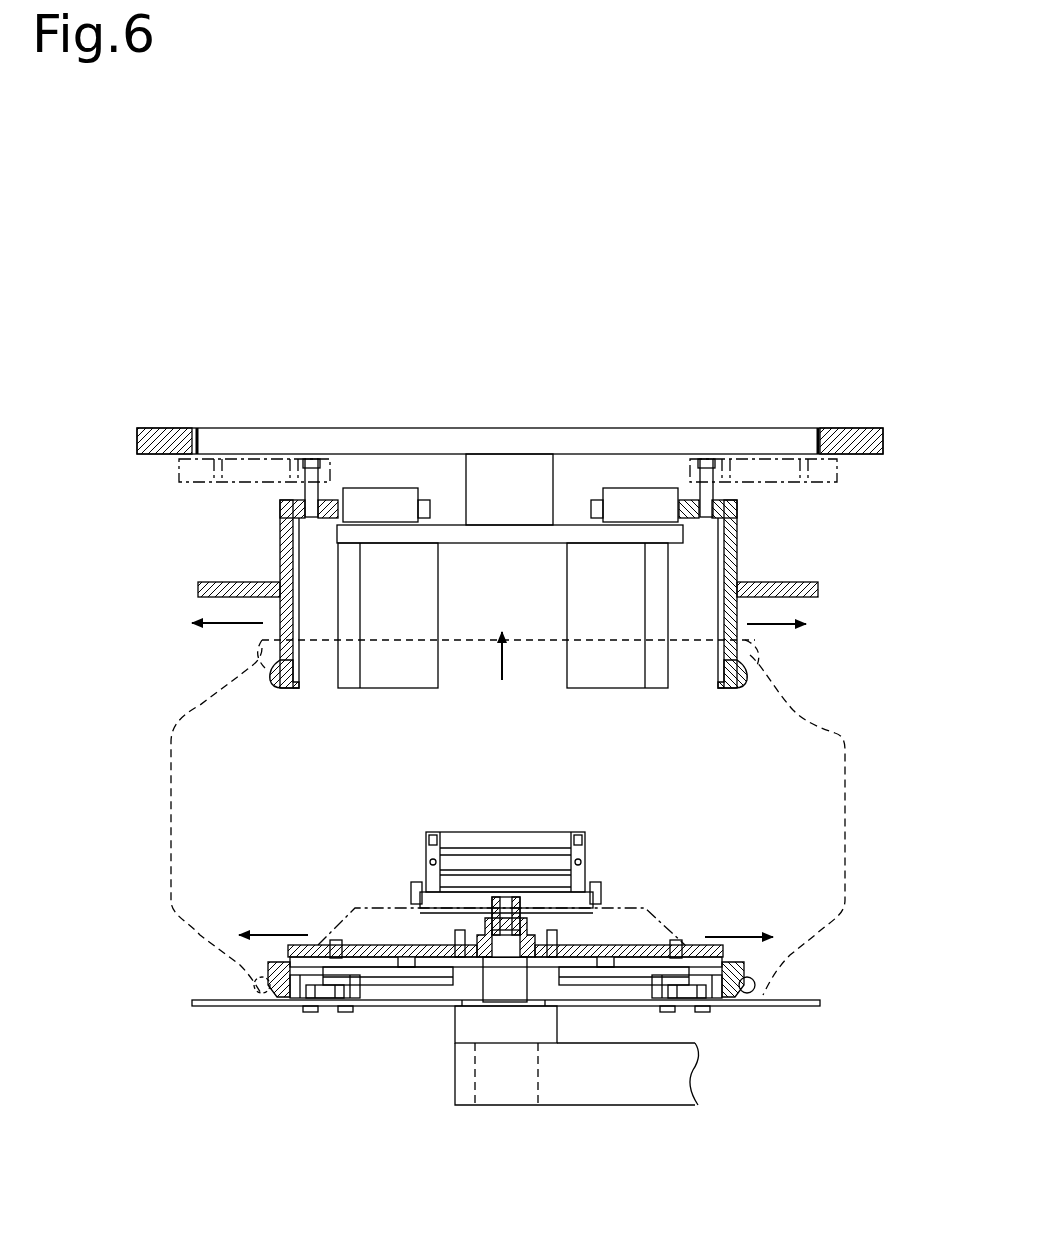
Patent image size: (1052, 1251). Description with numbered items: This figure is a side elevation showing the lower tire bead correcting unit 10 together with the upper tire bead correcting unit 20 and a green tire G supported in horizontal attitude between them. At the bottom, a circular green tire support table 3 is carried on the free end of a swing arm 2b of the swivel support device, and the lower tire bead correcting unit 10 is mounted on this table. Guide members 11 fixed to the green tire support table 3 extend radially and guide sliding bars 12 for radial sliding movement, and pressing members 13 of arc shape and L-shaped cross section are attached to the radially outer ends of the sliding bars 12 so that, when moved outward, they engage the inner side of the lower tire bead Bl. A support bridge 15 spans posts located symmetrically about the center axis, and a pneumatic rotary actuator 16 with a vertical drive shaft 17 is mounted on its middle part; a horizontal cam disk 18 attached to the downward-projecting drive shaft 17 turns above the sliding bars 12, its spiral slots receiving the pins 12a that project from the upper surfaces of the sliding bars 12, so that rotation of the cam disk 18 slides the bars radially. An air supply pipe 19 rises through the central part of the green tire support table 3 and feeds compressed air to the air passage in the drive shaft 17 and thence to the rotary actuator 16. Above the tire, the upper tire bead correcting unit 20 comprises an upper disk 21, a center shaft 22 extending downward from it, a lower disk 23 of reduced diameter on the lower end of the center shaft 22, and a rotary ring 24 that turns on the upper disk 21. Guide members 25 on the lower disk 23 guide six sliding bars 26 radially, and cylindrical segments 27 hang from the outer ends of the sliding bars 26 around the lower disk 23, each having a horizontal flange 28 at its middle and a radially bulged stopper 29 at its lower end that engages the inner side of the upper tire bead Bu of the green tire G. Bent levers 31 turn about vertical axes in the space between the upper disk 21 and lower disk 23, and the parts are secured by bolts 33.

The upper tire bead correcting unit 20 is at (457, 402).
The upper disk 21 is at (518, 428).
The center shaft 22 is at (487, 478).
The lower disk 23 is at (510, 530).
The rotary ring 24 is at (155, 428).
The guide members 25 is at (365, 488).
The sliding bars 26 is at (426, 500).
The cylindrical segments 27 is at (290, 590).
The horizontal flange 28 is at (198, 590).
The stopper 29 is at (748, 680).
The bent levers 31 is at (235, 485).
The bolt 33 is at (312, 459).
The lower tire bead correcting unit 10 is at (395, 868).
The guide members 11 is at (315, 1000).
The sliding bars 12 is at (407, 985).
The pins 12a is at (610, 945).
The pressing members 13 is at (273, 958).
The support bridge 15 is at (367, 908).
The pneumatic rotary actuator 16 is at (525, 832).
The drive shaft 17 is at (560, 940).
The cam disk 18 is at (672, 935).
The air supply pipe 19 is at (503, 1037).
The green tire support table 3 is at (805, 1006).
The swing arms 2b is at (610, 1105).
The upper tire bead Bu is at (262, 645).
The lower tire bead Bl is at (265, 990).
The green tire G is at (171, 815).